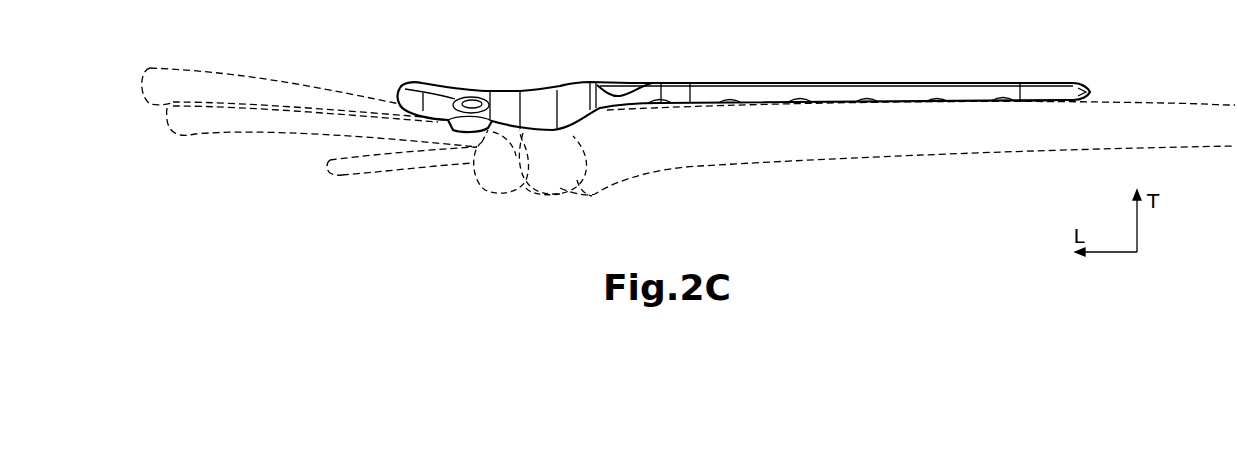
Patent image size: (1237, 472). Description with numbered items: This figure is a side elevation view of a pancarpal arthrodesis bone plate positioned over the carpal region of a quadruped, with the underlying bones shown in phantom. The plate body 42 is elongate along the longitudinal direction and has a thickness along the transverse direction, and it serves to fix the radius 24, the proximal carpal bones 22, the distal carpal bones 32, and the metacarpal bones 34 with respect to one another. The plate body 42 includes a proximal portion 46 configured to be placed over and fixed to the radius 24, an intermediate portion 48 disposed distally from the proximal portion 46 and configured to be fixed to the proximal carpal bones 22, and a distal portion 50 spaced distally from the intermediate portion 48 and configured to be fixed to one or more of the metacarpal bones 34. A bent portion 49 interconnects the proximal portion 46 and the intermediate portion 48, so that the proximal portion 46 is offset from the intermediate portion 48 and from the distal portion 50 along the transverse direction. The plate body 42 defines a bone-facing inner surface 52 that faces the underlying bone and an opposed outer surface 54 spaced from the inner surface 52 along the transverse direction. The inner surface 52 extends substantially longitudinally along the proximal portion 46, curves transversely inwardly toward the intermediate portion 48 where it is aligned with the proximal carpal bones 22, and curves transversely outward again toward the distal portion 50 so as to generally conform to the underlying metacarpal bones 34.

The proximal carpal bones 22 is at (545, 193).
The radius 24 is at (1137, 103).
The distal carpal bones 32 is at (487, 187).
The metacarpal bones 34 is at (358, 163).
The plate body 42 is at (744, 110).
The proximal portion 46 is at (833, 82).
The intermediate portion 48 is at (557, 85).
The bent portion 49 is at (596, 83).
The distal portion 50 is at (449, 92).
The bone-facing inner surface 52 is at (713, 105).
The outer surface 54 is at (683, 83).